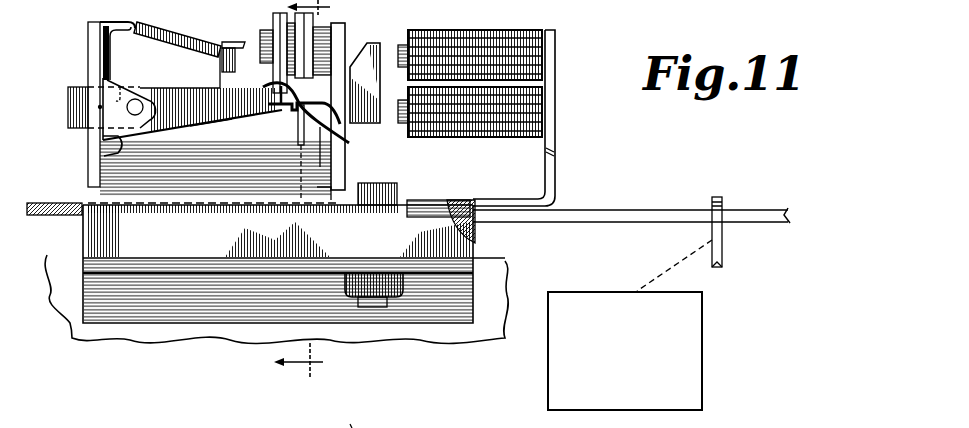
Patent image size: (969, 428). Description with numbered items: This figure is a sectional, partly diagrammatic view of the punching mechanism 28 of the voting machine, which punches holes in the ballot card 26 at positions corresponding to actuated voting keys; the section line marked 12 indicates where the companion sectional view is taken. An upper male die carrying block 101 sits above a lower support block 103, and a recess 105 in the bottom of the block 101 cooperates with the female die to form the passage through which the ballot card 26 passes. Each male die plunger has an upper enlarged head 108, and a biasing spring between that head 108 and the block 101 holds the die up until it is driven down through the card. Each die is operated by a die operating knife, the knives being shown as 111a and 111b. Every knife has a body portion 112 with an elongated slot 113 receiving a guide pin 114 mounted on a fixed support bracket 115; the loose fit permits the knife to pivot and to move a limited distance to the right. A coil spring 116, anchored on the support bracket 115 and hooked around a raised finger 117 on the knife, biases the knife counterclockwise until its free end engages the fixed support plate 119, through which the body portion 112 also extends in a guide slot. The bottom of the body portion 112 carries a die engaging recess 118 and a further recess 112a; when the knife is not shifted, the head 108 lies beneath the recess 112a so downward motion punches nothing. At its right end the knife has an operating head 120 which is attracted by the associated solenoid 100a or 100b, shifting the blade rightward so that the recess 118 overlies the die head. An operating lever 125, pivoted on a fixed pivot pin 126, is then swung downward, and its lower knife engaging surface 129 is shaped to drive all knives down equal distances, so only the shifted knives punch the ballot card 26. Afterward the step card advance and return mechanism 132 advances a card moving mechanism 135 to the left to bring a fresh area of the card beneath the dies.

The ballot card 26 is at (637, 209).
The punching mechanism 28 is at (595, 58).
The solenoid 100a is at (481, 123).
The solenoid 100b is at (513, 48).
The male die carrying block 101 is at (123, 168).
The lower support block 103 is at (97, 234).
The recess 105 is at (213, 208).
The head 108 is at (298, 128).
The die operating knife 111a is at (197, 129).
The die operating knife 111b is at (352, 414).
The body portion 112 is at (227, 117).
The recess 112a is at (349, 143).
The elongated slot 113 is at (125, 80).
The guide pin 114 is at (135, 99).
The support bracket 115 is at (112, 154).
The coil spring 116 is at (205, 28).
The raised finger 117 is at (245, 43).
The die engaging recess 118 is at (284, 112).
The fixed support plate 119 is at (345, 43).
The operating head 120 is at (383, 123).
The operating lever 125 is at (268, 89).
The fixed pivot pin 126 is at (262, 56).
The knife engaging surface 129 is at (407, 425).
The step card advance and return mechanism 132 is at (703, 325).
The card moving mechanism 135 is at (718, 197).
The section line 12- 12 is at (318, 190).